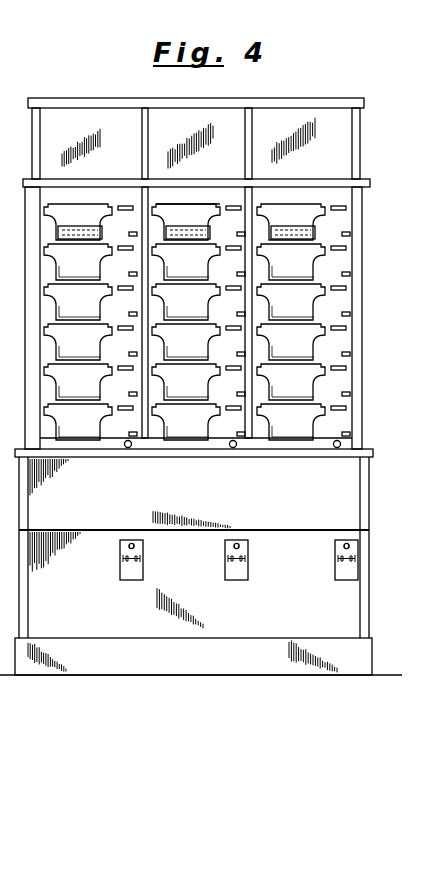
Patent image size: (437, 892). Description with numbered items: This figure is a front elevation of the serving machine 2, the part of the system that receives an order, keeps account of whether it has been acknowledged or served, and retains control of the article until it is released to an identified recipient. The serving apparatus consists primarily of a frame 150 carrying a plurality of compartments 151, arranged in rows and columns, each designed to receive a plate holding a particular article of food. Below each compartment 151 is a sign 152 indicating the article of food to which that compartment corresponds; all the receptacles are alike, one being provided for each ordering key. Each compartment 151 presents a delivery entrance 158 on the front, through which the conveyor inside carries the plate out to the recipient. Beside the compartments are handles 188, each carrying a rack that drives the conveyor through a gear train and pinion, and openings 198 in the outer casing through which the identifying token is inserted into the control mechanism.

The serving machine 2 is at (321, 97).
The frame 150 is at (347, 200).
The compartment 151 is at (188, 215).
The sign 152 is at (316, 233).
The delivery entrance 158 is at (163, 212).
The handle 188 is at (339, 327).
The opening 198 is at (344, 391).